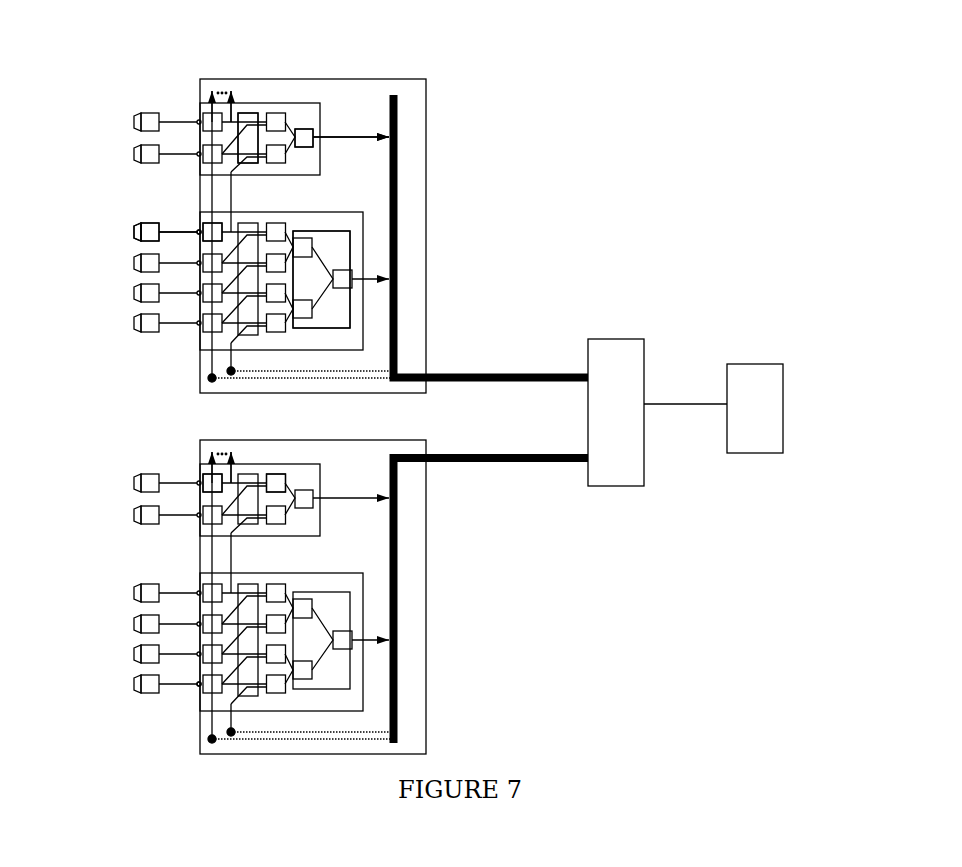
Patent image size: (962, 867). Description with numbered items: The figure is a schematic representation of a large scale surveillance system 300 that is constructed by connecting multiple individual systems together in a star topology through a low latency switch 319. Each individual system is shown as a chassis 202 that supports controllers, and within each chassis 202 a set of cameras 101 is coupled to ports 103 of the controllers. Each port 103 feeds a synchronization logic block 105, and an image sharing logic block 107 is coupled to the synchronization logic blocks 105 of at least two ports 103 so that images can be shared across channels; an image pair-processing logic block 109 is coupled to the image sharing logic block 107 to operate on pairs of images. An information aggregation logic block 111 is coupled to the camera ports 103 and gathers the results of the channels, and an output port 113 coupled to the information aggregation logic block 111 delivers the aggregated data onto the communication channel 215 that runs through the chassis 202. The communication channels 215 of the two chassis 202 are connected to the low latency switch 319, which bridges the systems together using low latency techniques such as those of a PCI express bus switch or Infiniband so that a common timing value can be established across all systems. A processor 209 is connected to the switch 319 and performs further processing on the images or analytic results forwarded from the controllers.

The large scale system 300 is at (165, 65).
The camera 101 is at (128, 232).
The port 103 is at (196, 692).
The synchronization logic block 105 is at (204, 223).
The image sharing logic block 107 is at (250, 111).
The image pair-processing logic block 109 is at (275, 473).
The information aggregation logic block 111 is at (309, 124).
The output port 113 is at (369, 132).
The chassis 202 is at (427, 141).
The communication channel 215 is at (398, 215).
The low latency switch 319 is at (621, 330).
The processor 209 is at (785, 397).